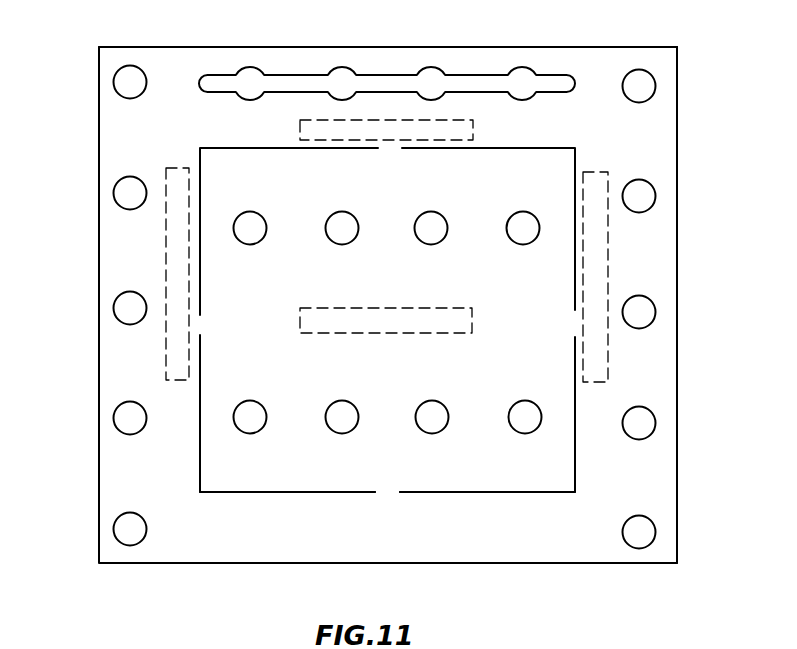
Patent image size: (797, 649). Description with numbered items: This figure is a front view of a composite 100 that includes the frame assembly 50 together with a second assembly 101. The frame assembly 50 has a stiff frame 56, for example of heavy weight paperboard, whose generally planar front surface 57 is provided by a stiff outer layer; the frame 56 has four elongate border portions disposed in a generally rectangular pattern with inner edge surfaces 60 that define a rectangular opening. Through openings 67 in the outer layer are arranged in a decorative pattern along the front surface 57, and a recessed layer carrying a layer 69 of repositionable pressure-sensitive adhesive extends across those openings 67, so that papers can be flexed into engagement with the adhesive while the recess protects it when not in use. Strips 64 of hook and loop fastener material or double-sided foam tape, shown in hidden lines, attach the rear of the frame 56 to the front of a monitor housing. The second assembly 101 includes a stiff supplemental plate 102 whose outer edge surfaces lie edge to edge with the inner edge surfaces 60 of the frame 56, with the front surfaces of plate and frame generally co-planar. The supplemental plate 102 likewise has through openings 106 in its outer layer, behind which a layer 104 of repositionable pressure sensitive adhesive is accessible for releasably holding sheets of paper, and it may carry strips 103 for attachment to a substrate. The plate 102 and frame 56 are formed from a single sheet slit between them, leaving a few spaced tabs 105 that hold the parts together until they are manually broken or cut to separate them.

The composite 100 is at (682, 36).
The frame assembly 50 is at (611, 45).
The frame 56 is at (680, 110).
The front surface 57 is at (666, 155).
The through openings 67 is at (436, 80).
The layer of repositionable pressure-sensitive adhesive 69 is at (347, 82).
The inner edge surfaces 60 is at (575, 190).
The tabs 105 is at (390, 150).
The strips 64 is at (474, 133).
The strips 103 is at (472, 308).
The through openings 106 is at (338, 226).
The layer of repositionable pressure sensitive adhesive 104 is at (338, 239).
The supplemental plate 102 is at (314, 465).
The second assembly 101 is at (522, 497).